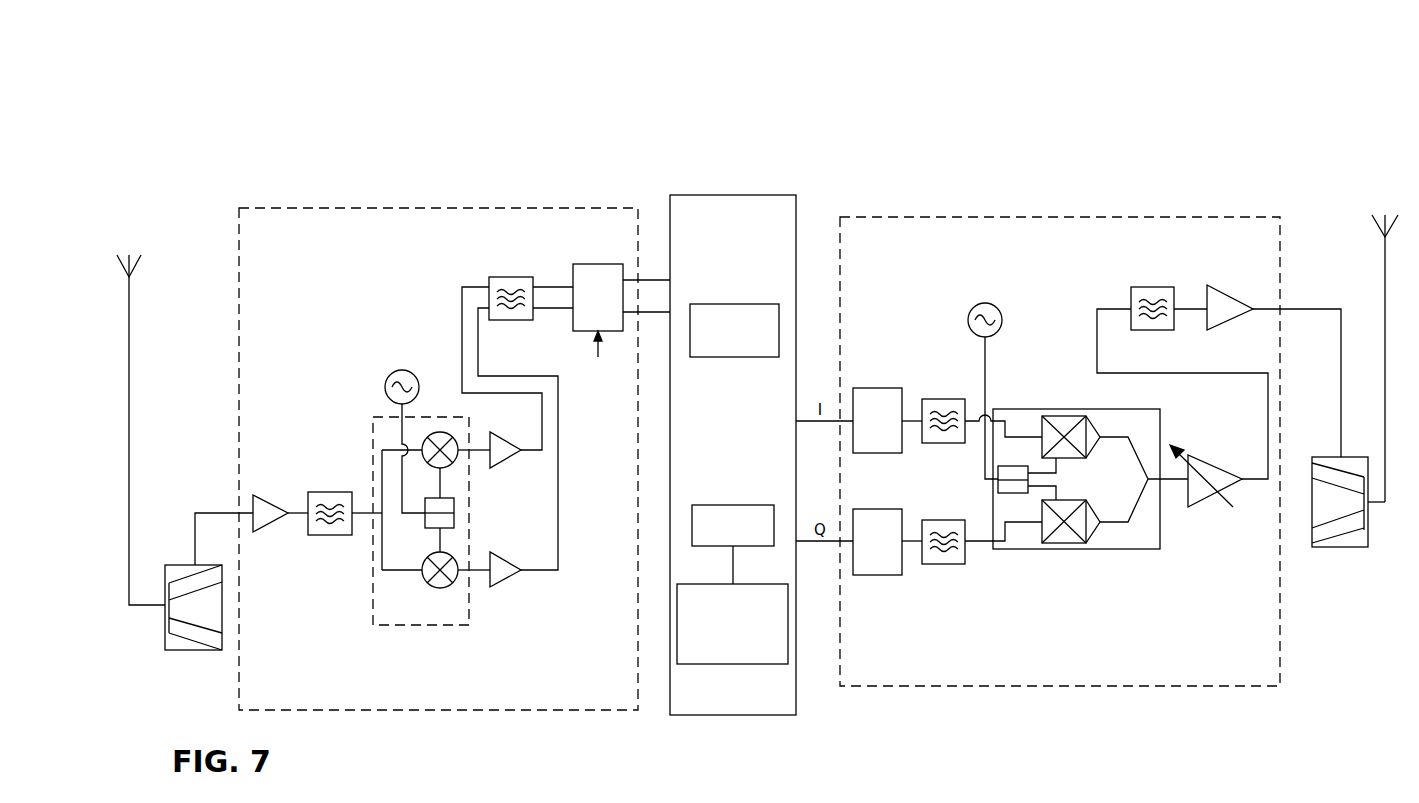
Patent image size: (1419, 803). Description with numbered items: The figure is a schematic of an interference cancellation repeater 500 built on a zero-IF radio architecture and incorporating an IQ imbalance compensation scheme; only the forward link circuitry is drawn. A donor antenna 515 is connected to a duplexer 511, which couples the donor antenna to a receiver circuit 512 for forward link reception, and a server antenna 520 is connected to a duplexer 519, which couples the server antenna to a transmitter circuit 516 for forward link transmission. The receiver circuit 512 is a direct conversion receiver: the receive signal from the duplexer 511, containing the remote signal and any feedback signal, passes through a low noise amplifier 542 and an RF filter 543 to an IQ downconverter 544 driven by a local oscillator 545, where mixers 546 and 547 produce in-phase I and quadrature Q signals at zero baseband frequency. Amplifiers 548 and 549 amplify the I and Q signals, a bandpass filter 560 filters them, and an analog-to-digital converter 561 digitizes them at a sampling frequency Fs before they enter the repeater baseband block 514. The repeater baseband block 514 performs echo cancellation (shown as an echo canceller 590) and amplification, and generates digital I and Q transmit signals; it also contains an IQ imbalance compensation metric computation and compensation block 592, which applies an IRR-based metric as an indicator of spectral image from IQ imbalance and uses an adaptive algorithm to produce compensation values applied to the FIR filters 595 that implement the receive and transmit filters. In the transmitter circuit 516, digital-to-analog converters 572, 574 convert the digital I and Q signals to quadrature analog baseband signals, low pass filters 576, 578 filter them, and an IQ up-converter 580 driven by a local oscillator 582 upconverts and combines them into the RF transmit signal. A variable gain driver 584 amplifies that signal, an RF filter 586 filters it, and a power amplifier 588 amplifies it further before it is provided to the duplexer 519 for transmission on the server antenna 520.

The repeater 500 is at (256, 100).
The duplexer 511 is at (195, 650).
The receiver circuit 512 is at (315, 208).
The repeater baseband block 514 is at (735, 195).
The donor antenna 515 is at (131, 335).
The transmitter circuit 516 is at (921, 217).
The duplexer 519 is at (1338, 547).
The server antenna 520 is at (1385, 255).
The low noise amplifier 542 is at (270, 502).
The RF filter 543 is at (331, 490).
The IQ downconverter 544 is at (373, 609).
The local oscillator 545 is at (402, 370).
The mixer 546 is at (440, 431).
The mixer 547 is at (444, 587).
The amplifier 548 is at (498, 470).
The amplifier 549 is at (501, 588).
The bandpass filter 560 is at (512, 277).
The analog-to-digital converter 561 is at (588, 264).
The digital-to-analog converter 572 is at (877, 388).
The digital-to-analog converter 574 is at (877, 509).
The low pass filter 576 is at (940, 520).
The low pass filter 578 is at (940, 399).
The IQ up-converter 580 is at (1049, 409).
The local oscillator 582 is at (968, 320).
The variable gain driver 584 is at (1215, 465).
The RF filter 586 is at (1149, 287).
The power amplifier 588 is at (1227, 294).
The echo canceller 590 is at (755, 357).
The IQ imbalance compensation metric computation and compensation block 592 is at (759, 664).
The FIR filters 595 is at (749, 505).